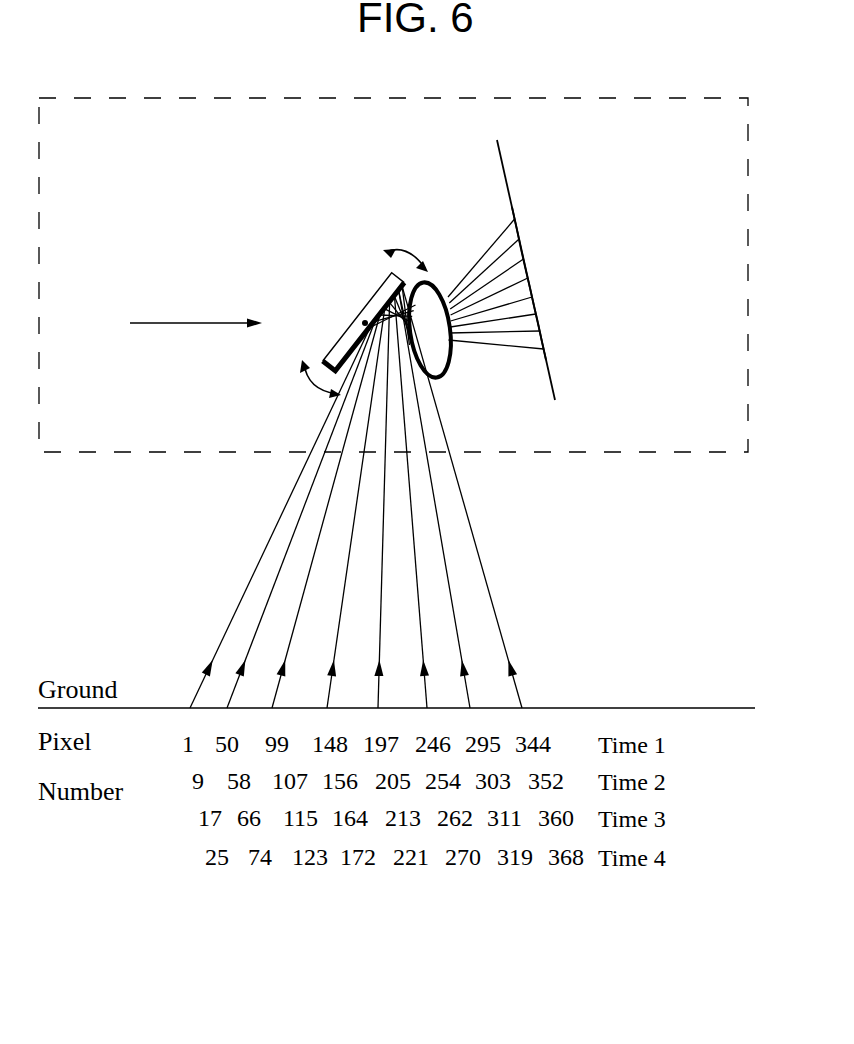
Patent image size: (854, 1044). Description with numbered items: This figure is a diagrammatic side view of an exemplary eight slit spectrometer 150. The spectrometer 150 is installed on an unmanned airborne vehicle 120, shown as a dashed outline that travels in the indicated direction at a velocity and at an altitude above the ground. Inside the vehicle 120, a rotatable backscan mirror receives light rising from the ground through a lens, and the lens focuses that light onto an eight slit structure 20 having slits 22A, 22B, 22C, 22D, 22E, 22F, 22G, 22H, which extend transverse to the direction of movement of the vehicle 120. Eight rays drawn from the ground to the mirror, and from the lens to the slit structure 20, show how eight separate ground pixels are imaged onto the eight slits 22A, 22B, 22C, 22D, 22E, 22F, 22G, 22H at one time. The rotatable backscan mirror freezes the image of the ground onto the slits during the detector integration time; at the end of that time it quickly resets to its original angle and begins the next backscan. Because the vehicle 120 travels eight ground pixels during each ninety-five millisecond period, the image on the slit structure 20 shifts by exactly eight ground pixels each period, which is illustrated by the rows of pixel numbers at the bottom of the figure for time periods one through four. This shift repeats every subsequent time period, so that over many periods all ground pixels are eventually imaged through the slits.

The eight slit spectrometer 150 is at (76, 57).
The unmanned airborne vehicle 120 is at (668, 453).
The slit structure 20 is at (505, 158).
The slit A 22A is at (531, 190).
The slit B 22B is at (545, 222).
The slit C 22C is at (541, 246).
The slit D 22D is at (549, 269).
The slit E 22E is at (551, 296).
The slit F 22F is at (556, 316).
The slit G 22G is at (561, 341).
The slit H 22H is at (566, 365).